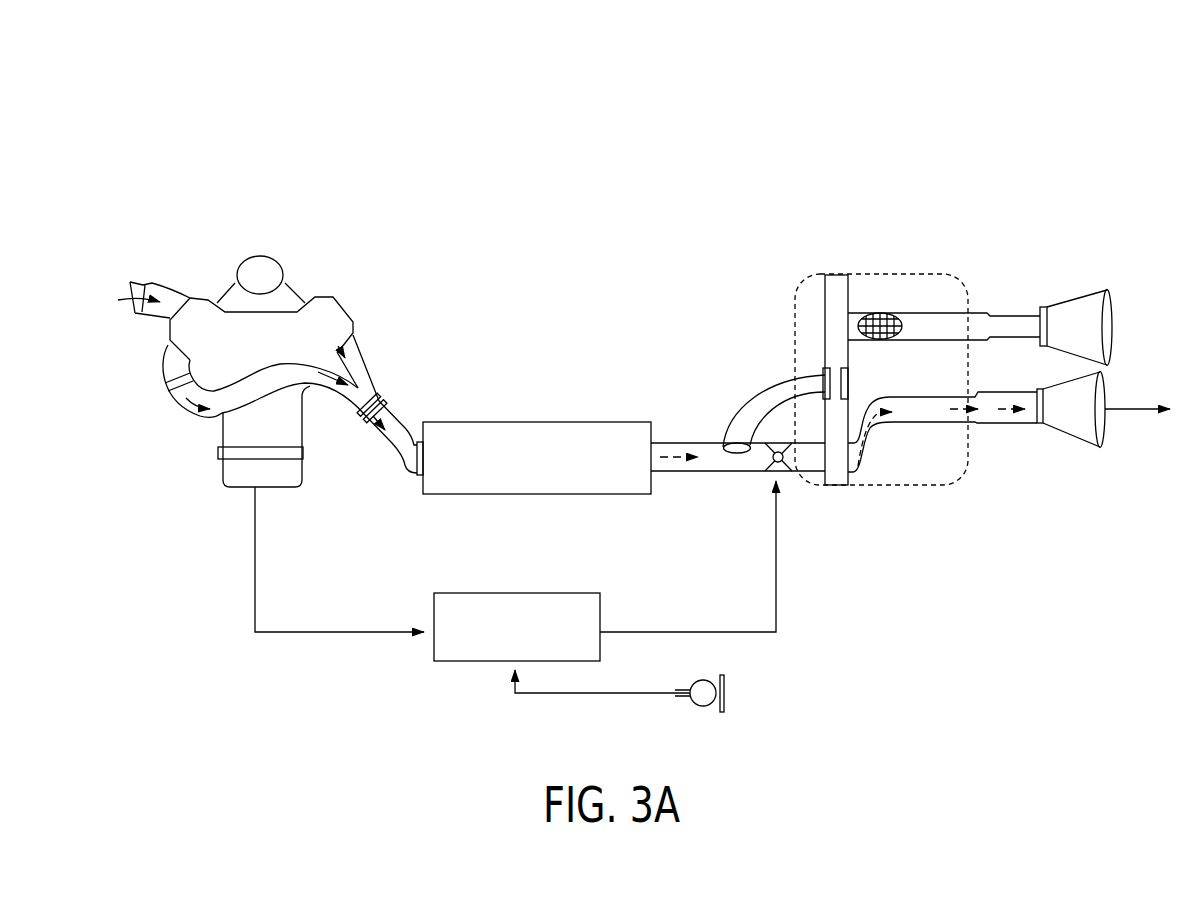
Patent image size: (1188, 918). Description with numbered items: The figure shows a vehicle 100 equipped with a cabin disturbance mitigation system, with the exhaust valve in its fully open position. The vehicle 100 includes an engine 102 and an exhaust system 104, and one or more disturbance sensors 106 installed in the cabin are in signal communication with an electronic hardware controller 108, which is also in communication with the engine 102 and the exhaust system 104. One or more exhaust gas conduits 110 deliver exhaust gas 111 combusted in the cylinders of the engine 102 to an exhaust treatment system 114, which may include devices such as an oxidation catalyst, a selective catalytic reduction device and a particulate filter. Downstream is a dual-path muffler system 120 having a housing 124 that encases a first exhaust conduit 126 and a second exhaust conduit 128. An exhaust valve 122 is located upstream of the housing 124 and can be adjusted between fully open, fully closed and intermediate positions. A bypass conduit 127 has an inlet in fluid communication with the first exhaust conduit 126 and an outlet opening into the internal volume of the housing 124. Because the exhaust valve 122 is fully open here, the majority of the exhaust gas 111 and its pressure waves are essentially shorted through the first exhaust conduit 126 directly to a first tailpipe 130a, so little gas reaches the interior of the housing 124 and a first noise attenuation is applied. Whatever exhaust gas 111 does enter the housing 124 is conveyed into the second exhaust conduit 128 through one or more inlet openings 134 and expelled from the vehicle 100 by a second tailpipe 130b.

The vehicle 100 is at (326, 132).
The engine 102 is at (216, 430).
The exhaust system 104 is at (576, 232).
The disturbance sensors 106 is at (704, 703).
The electronic hardware controller 108 is at (517, 593).
The exhaust gas conduits 110 is at (370, 382).
The exhaust gas 111 is at (380, 435).
The exhaust treatment system 114 is at (537, 419).
The dual-path muffler system 120 is at (887, 187).
The exhaust valve 122 is at (793, 477).
The housing 124 is at (886, 495).
The first exhaust conduit 126 is at (925, 402).
The bypass conduit 127 is at (748, 402).
The second exhaust conduit 128 is at (925, 320).
The first tailpipe 130a is at (1077, 449).
The second tailpipe 130b is at (1074, 293).
The inlet openings 134 is at (884, 316).